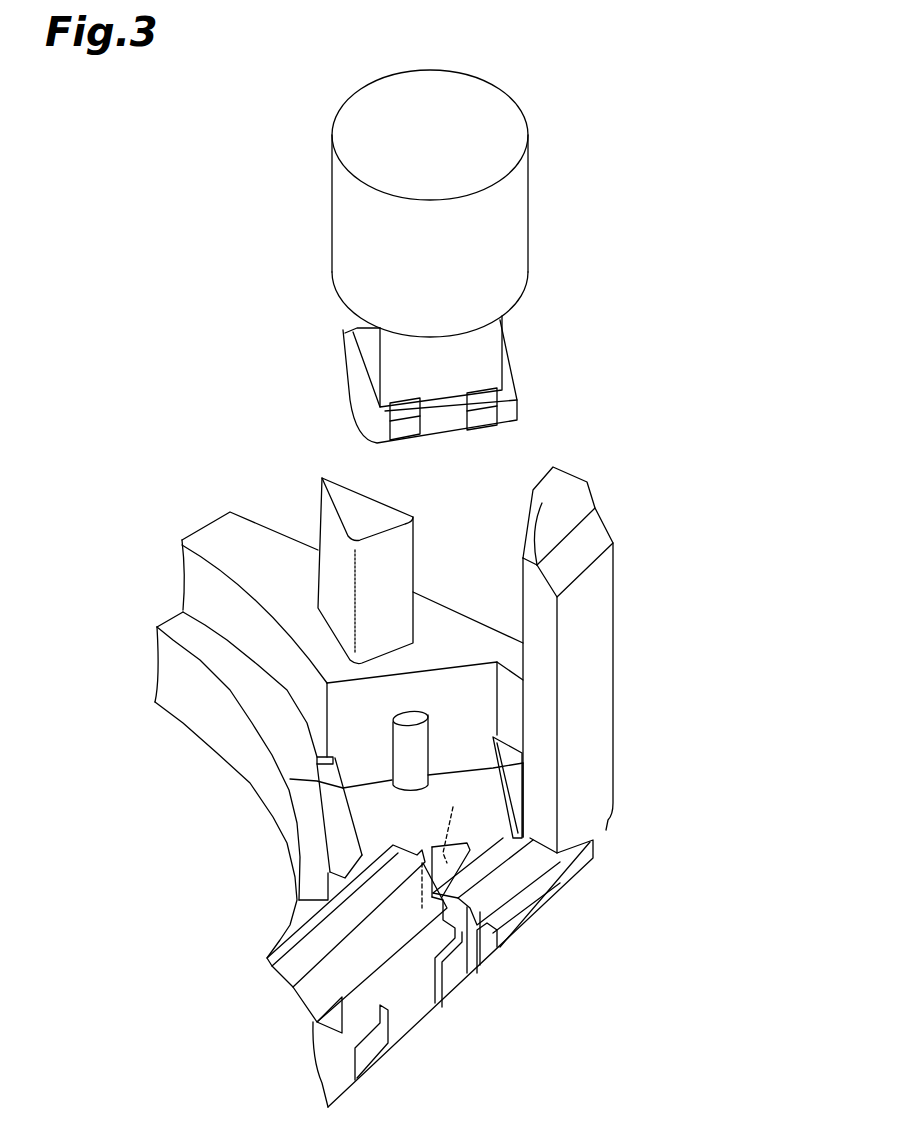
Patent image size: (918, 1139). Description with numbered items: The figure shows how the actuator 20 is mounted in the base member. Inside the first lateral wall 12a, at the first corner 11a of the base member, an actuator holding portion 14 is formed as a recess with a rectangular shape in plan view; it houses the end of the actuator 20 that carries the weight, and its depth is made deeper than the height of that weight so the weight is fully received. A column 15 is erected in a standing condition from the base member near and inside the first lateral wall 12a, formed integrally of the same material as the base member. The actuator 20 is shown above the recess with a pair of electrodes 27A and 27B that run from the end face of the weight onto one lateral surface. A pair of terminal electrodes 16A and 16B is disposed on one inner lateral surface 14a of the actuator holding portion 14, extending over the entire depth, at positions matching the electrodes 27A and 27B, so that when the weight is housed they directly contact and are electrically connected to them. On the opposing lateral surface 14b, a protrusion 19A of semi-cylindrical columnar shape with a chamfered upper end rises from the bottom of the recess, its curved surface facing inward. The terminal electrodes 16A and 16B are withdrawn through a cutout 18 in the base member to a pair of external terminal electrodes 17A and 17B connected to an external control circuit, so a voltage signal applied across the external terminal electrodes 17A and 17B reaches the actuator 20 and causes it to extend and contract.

The actuator 20 is at (547, 173).
The electrode 27A is at (407, 433).
The electrode 27B is at (485, 425).
The column 15 is at (332, 487).
The first lateral wall 12a is at (567, 485).
The first corner 11a is at (613, 776).
The actuator holding portion 14 is at (530, 763).
The inner lateral surface 14a is at (497, 768).
The lateral surface 14b is at (372, 752).
The protrusion 19A is at (423, 755).
The terminal electrode 16A is at (413, 850).
The terminal electrode 16B is at (527, 837).
The cutout 18 is at (490, 928).
The external terminal electrode 17A is at (373, 1050).
The external terminal electrode 17B is at (452, 973).